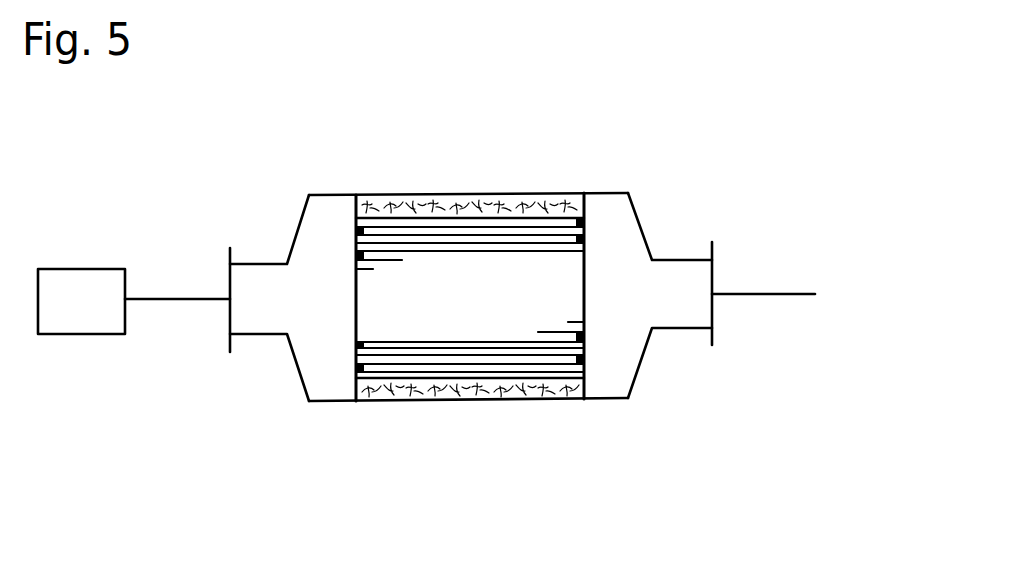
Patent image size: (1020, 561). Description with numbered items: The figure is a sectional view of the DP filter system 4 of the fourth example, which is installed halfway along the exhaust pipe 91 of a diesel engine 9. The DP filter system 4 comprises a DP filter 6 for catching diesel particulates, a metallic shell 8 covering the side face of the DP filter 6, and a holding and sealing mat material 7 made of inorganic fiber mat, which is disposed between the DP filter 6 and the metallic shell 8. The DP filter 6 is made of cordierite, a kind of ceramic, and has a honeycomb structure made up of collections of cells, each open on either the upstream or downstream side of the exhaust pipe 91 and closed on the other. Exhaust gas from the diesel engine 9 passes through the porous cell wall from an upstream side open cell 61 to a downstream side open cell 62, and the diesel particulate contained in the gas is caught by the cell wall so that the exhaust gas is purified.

The DP filter system 4 is at (268, 395).
The DP filter 6 is at (470, 303).
The upstream side open cell 61 is at (390, 355).
The downstream side open cell 62 is at (428, 348).
The holding and sealing mat material 7 is at (524, 203).
The metallic shell 8 is at (532, 400).
The diesel engine 9 is at (73, 335).
The exhaust pipe 91 is at (172, 296).